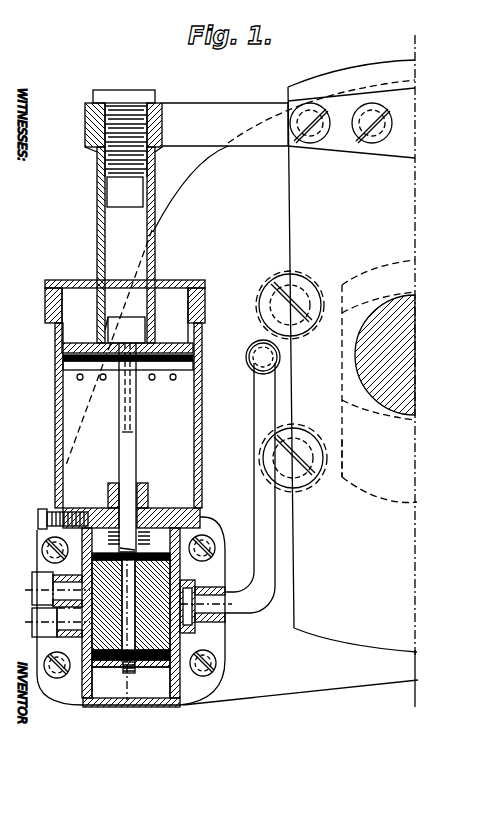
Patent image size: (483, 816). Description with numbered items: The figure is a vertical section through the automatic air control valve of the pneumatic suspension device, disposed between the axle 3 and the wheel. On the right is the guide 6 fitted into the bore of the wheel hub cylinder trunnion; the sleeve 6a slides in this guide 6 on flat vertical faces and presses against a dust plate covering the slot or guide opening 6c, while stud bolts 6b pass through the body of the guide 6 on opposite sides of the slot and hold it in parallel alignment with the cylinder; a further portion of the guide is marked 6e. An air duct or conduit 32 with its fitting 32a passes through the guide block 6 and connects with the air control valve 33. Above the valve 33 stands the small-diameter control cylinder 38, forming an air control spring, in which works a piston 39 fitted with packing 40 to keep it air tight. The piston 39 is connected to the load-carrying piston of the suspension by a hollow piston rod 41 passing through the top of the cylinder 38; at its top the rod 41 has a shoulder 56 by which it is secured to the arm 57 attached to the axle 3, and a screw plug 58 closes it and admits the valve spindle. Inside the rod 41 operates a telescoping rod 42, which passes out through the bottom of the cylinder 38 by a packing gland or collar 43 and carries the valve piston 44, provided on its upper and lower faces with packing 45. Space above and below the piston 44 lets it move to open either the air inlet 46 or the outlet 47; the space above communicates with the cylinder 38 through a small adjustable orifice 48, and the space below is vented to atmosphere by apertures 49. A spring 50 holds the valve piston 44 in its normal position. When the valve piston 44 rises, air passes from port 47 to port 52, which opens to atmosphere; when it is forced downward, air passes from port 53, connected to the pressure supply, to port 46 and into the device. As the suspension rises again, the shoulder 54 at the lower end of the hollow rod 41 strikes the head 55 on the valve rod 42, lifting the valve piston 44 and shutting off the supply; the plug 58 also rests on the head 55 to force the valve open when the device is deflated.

The axle 3 is at (415, 313).
The guide 6 is at (343, 460).
The sleeve 6a is at (372, 428).
The stud bolts 6b is at (300, 290).
The slot or guide opening 6c is at (351, 154).
The bracket flange portion 6e is at (373, 458).
The air duct or conduit 32 is at (254, 392).
The pipe fitting 32a is at (255, 347).
The air control valve 33 is at (83, 690).
The control cylinder 38 is at (202, 437).
The piston 39 is at (62, 340).
The packing 40 is at (63, 368).
The hollow piston rod 41 is at (155, 240).
The telescoping rod 42 is at (136, 450).
The packing gland or collar 43 is at (148, 490).
The valve piston 44 is at (97, 664).
The packing 45 is at (150, 676).
The air inlet 46 is at (195, 633).
The outlet 47 is at (195, 585).
The adjustable orifice 48 is at (90, 510).
The apertures 49 is at (183, 703).
The spring 50 is at (145, 550).
The port 52 is at (57, 589).
The port 53 is at (57, 622).
The shoulder 54 is at (108, 332).
The head 55 is at (142, 326).
The shoulder 56 is at (162, 150).
The arm 57 is at (229, 284).
The screw plug 58 is at (125, 192).